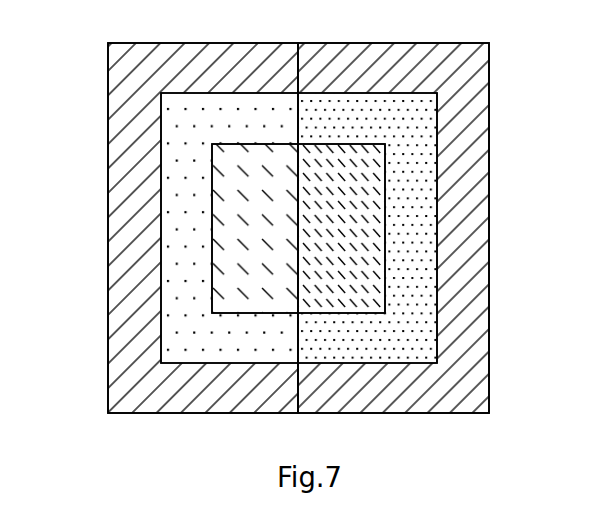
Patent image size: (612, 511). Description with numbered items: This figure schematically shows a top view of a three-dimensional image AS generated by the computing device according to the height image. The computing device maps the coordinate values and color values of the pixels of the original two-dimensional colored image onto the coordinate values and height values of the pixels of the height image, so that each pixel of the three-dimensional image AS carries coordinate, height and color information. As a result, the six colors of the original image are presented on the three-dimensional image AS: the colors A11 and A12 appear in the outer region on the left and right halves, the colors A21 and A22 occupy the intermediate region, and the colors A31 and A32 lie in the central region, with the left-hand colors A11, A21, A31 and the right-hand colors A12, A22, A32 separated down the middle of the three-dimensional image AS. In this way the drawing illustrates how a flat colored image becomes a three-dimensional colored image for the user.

The 3D image AS is at (108, 413).
The color A11 is at (108, 63).
The color A12 is at (489, 63).
The color A21 is at (167, 128).
The color A22 is at (430, 128).
The color A31 is at (222, 203).
The color A32 is at (375, 205).